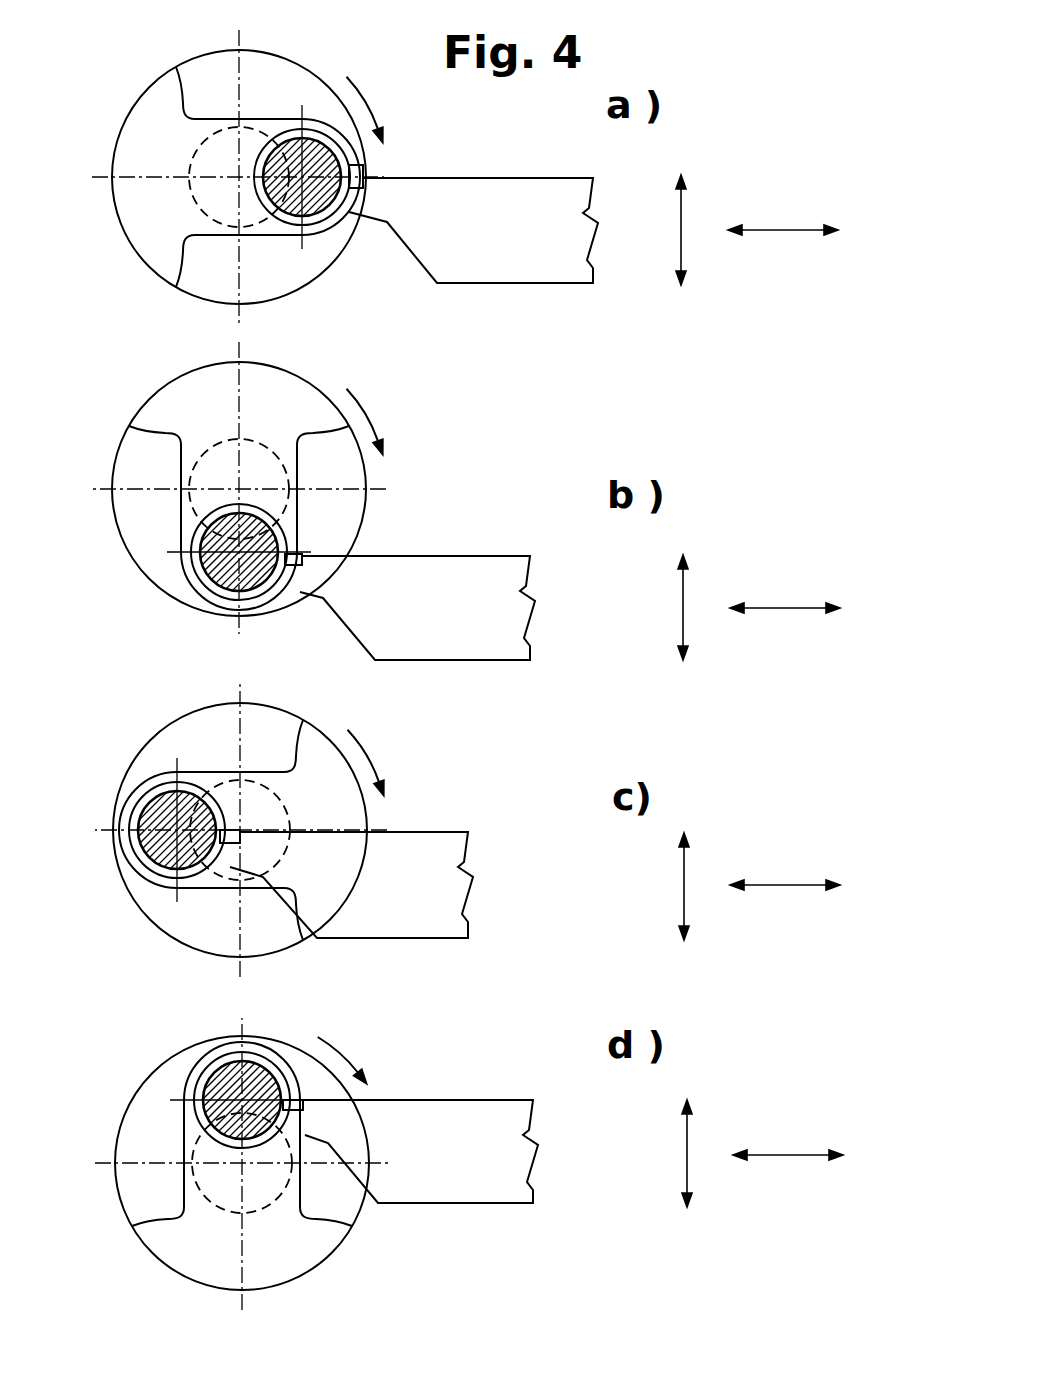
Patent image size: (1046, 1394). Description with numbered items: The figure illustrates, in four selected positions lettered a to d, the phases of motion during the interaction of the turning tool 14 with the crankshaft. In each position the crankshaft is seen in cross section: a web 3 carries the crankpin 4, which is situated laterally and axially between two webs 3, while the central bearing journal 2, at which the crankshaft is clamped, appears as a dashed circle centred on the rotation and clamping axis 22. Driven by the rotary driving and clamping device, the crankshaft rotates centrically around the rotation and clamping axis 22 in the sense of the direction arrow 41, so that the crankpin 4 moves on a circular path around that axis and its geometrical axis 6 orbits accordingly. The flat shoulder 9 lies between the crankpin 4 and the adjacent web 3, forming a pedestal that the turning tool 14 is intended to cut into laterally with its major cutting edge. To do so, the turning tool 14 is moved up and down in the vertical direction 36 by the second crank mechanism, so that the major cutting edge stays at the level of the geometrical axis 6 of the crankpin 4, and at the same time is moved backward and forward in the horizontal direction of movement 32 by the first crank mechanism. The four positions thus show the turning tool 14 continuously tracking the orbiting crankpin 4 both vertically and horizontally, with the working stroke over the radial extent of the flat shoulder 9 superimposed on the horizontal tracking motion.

The central bearing journal 2 is at (193, 152).
The web 3 is at (167, 243).
The crankpin 4 is at (310, 137).
The geometrical axis 6 is at (320, 163).
The flat shoulder 9 is at (323, 218).
The turning tool 14 is at (512, 190).
The rotation and clamping axis 22 is at (237, 178).
The horizontal direction of movement 32 is at (795, 231).
The vertical direction 36 is at (682, 248).
The direction arrow 41 is at (368, 97).